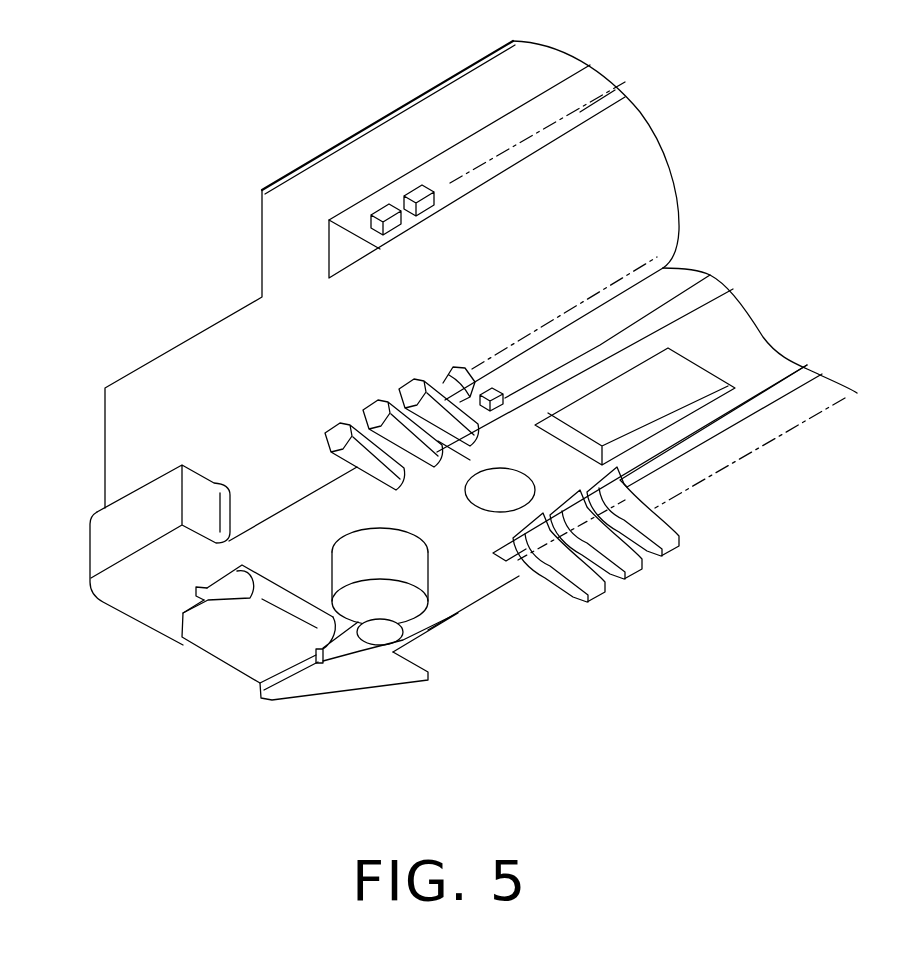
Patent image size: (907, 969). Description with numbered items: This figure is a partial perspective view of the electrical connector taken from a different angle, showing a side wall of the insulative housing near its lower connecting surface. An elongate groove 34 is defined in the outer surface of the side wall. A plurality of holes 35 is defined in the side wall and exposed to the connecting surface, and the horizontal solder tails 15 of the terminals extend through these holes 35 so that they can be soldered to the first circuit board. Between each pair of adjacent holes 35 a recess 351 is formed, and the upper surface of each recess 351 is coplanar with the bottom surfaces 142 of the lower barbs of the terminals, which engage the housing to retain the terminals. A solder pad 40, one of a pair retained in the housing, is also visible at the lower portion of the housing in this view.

The elongate groove 34 is at (630, 97).
The solder tail 15 is at (440, 403).
The hole 35 is at (453, 380).
The bottom surface 142 is at (492, 395).
The recess 351 is at (485, 408).
The solder pad 40 is at (247, 641).